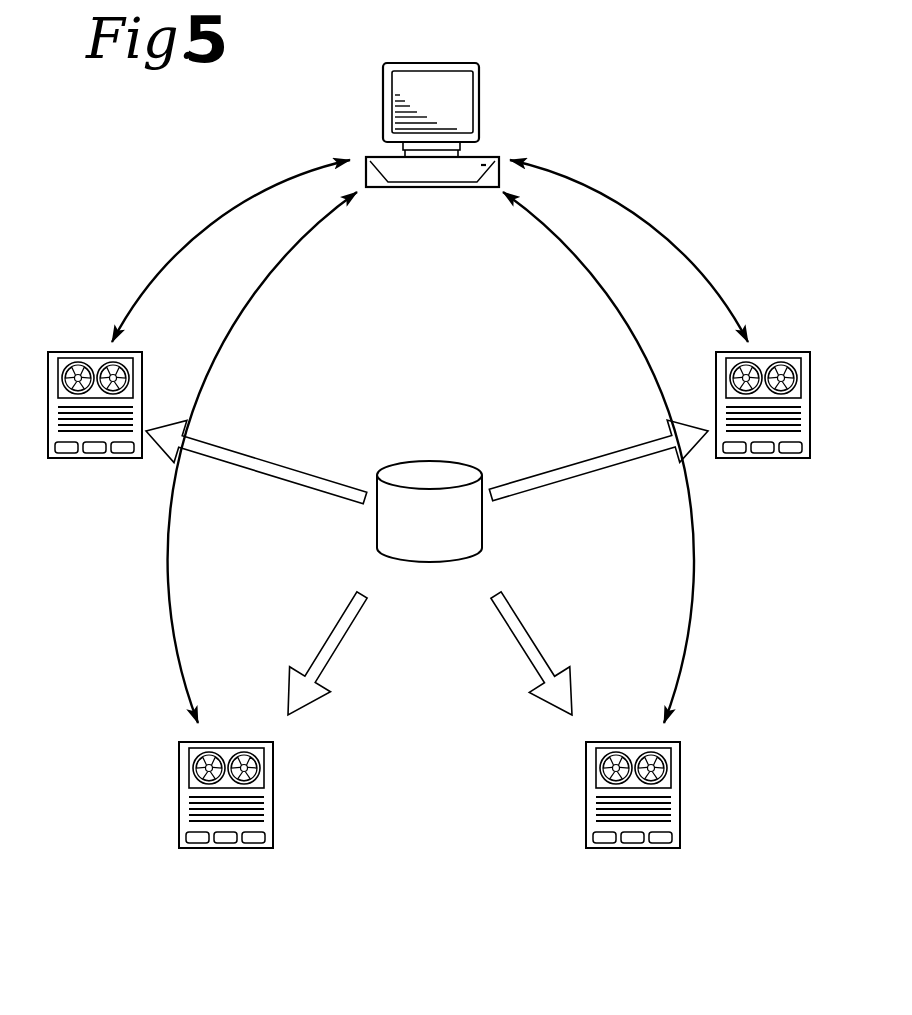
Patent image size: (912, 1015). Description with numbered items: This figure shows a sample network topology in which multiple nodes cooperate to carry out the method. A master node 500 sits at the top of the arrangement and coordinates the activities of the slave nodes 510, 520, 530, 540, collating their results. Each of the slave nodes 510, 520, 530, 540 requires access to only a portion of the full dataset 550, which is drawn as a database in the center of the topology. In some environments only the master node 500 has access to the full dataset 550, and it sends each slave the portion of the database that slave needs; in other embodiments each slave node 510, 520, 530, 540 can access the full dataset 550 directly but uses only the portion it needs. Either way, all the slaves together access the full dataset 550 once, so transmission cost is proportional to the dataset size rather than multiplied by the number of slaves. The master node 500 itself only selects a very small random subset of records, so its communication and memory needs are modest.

The master node 500 is at (492, 156).
The slave node 510 is at (75, 458).
The slave node 520 is at (782, 458).
The slave node 530 is at (176, 843).
The slave node 540 is at (681, 843).
The full dataset 550 is at (478, 548).